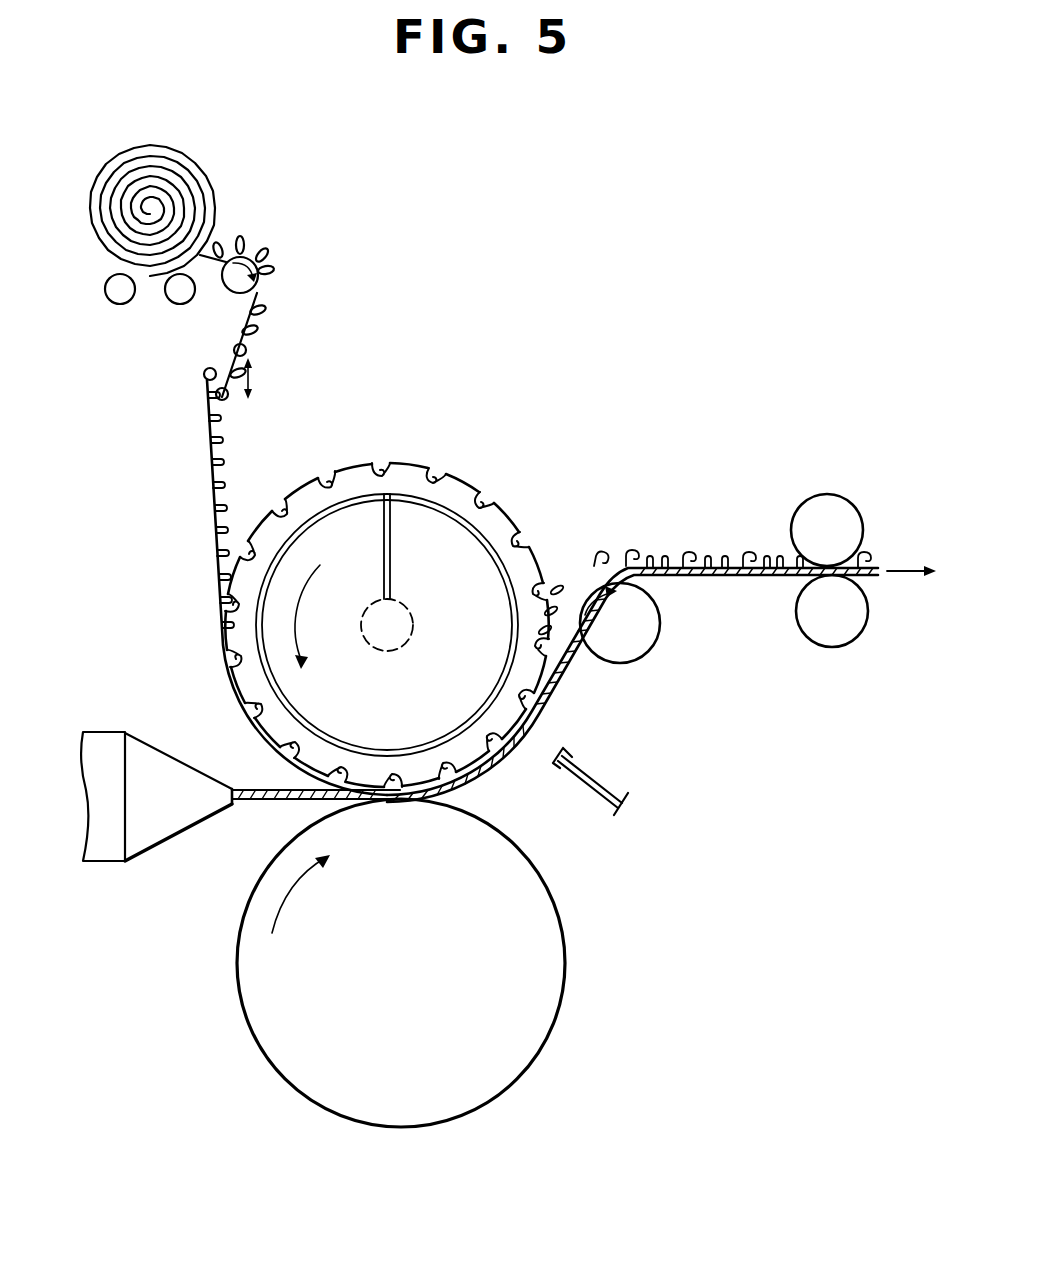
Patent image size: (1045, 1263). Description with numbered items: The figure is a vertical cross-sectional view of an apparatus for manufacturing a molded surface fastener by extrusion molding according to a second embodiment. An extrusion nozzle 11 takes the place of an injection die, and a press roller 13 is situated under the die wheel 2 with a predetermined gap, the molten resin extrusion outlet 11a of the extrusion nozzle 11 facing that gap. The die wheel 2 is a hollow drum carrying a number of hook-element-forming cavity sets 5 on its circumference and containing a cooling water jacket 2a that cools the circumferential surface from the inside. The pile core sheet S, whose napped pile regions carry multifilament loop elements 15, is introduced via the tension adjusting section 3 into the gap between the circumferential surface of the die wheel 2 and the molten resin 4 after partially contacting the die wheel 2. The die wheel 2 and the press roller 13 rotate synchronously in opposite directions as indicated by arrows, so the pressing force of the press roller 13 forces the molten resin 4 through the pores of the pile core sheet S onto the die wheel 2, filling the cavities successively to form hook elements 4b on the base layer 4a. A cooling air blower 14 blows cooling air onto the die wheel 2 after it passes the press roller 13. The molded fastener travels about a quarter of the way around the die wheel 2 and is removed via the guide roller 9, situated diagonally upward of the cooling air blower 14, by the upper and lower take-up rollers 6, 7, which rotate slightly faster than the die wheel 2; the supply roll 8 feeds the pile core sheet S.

The die wheel 2 is at (392, 589).
The cooling water jacket 2a is at (514, 510).
The tension adjusting section 3 is at (262, 357).
The molten resin 4 is at (270, 792).
The base layer 4a is at (715, 581).
The hook elements 4b is at (748, 556).
The hook-element-forming cavity sets 5 is at (379, 465).
The upper take-up roller 6 is at (827, 512).
The lower take-up roller 7 is at (832, 628).
The supply roll 8 is at (207, 197).
The guide roller 9 is at (637, 637).
The extrusion nozzle 11 is at (147, 757).
The molten resin extrusion outlet 11a is at (240, 808).
The press roller 13 is at (277, 1043).
The cooling air blower 14 is at (597, 783).
The loop elements 15 is at (214, 476).
The pile core sheet S is at (257, 313).